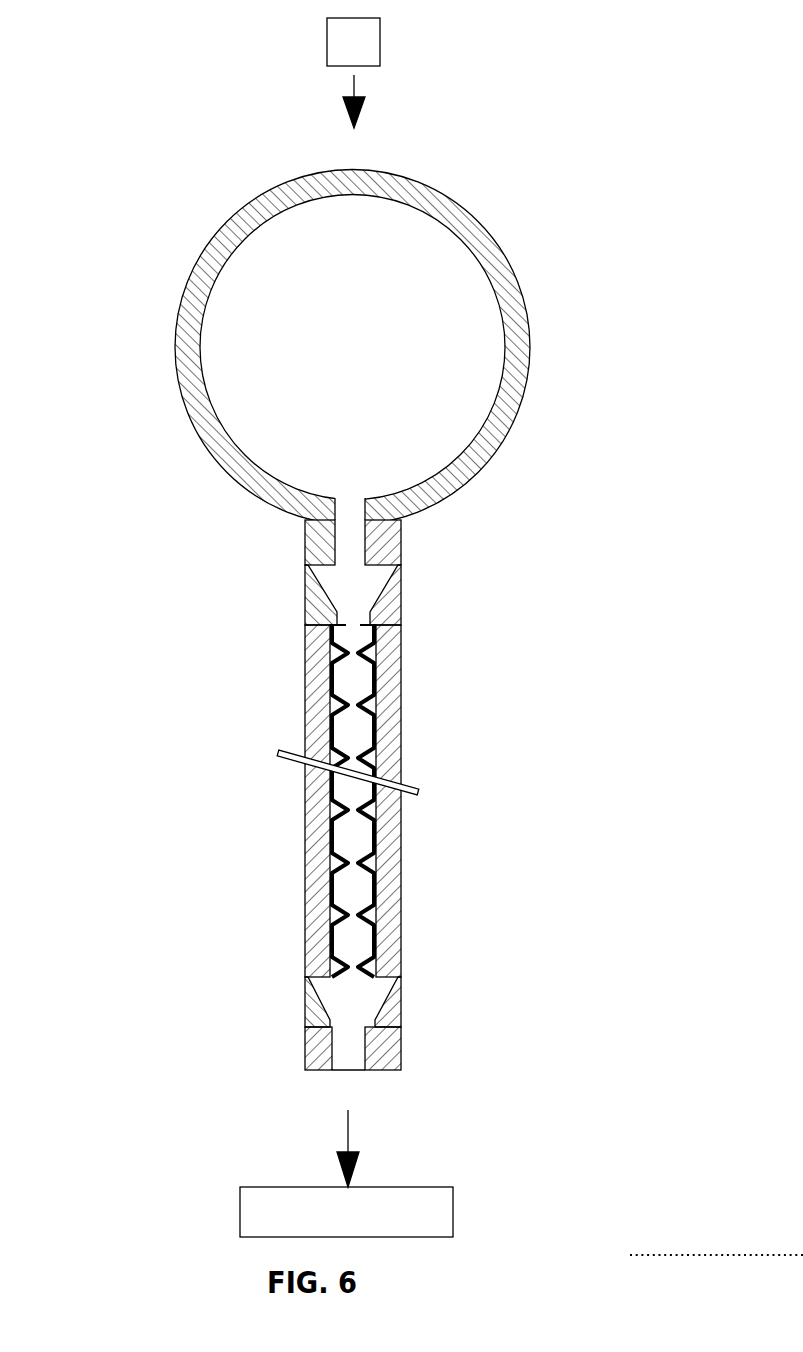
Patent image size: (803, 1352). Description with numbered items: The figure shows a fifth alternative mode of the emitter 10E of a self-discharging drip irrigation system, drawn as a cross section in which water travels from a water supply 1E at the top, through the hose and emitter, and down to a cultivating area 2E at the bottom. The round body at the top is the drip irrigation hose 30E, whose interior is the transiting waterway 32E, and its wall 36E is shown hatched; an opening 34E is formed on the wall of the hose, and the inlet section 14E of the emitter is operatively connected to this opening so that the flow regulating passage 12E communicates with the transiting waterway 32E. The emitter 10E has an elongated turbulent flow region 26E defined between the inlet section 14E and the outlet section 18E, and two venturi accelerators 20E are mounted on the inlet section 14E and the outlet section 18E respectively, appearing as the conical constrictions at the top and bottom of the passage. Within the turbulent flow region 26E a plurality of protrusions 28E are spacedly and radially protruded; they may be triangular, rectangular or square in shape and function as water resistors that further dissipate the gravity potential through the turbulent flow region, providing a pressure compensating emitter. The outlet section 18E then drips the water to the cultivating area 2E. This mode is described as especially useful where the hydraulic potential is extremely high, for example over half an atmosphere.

The water supply 1E is at (352, 52).
The cultivating area 2E is at (352, 1217).
The emitter 10E is at (373, 786).
The flow regulating passage 12E is at (190, 728).
The inlet section 14E is at (402, 553).
The outlet section 18E is at (400, 1050).
The venturi accelerator 20E is at (305, 597).
The turbulent flow region 26E is at (357, 897).
The protrusion 28E is at (376, 808).
The drip irrigation hose 30E is at (374, 321).
The transiting waterway 32E is at (347, 340).
The opening 34E is at (352, 517).
The reservoir wall 36E is at (406, 174).